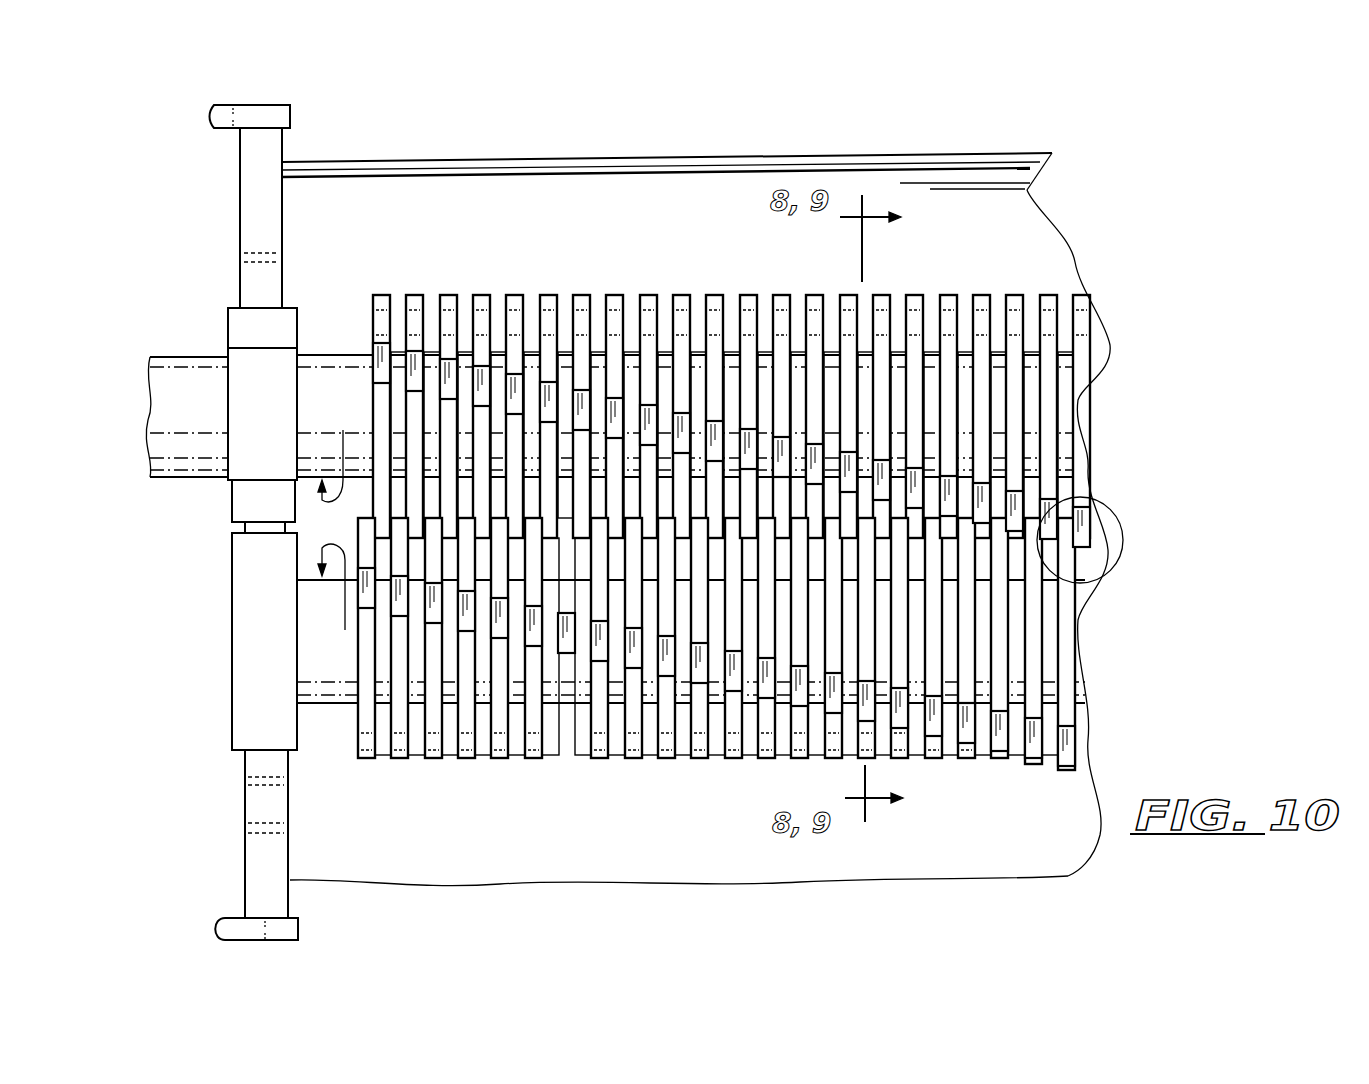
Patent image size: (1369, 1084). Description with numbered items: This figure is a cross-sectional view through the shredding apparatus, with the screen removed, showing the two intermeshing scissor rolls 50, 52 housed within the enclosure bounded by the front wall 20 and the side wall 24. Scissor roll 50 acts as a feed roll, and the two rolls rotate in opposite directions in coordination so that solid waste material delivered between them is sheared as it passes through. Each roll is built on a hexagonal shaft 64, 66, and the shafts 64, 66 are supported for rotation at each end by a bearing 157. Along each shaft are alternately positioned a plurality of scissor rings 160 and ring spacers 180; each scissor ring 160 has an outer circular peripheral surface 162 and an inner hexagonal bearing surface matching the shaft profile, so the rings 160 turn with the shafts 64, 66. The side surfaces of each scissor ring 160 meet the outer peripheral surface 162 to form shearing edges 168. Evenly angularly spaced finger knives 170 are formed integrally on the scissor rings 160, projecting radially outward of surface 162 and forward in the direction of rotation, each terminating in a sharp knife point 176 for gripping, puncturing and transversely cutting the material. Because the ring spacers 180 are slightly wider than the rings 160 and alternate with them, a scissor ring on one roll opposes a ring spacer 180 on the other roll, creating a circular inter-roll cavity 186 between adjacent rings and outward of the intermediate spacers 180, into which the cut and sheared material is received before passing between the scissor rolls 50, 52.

The front wall 20 is at (614, 160).
The side wall 24 is at (240, 200).
The scissor roll 50 is at (660, 285).
The scissor roll 52 is at (692, 778).
The shaft 64 is at (175, 409).
The shaft 66 is at (334, 705).
The bearing 157 is at (258, 365).
The scissor ring 160 is at (580, 295).
The outer circular peripheral surface 162 is at (847, 300).
The shearing edge 168 is at (938, 300).
The finger knife 170 is at (410, 375).
The sharp knife point 176 is at (1080, 576).
The ring spacer 180 is at (483, 760).
The inter-roll cavity 186 is at (425, 562).